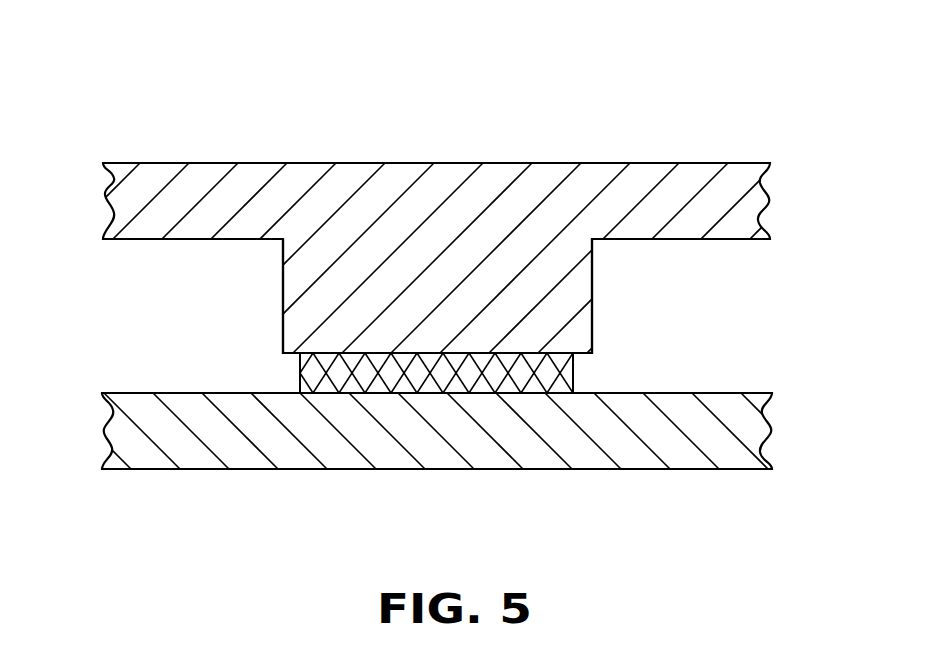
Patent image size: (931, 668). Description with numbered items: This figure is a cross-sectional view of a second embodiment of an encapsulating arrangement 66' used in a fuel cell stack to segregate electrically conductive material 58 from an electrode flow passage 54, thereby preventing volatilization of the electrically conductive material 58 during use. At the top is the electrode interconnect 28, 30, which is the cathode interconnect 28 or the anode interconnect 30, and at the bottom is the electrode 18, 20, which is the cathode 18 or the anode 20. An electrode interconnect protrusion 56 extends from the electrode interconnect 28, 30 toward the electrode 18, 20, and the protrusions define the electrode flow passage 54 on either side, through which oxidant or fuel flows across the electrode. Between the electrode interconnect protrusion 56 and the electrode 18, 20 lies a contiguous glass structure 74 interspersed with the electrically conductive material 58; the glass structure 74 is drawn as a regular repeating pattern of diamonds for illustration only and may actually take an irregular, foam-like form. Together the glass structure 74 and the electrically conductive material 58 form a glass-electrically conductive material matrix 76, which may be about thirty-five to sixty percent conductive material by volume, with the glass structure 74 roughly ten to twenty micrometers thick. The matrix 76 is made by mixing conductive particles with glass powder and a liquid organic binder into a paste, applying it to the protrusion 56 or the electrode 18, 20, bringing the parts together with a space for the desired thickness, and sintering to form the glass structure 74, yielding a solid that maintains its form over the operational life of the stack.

The cathode interconnect 28 is at (465, 193).
The anode interconnect 30 is at (328, 163).
The electrode flow passage 54 is at (220, 291).
The electrode interconnect protrusion 56 is at (283, 337).
The electrically conductive material 58 is at (526, 378).
The glass structure 74 is at (315, 363).
The glass-electrically conductive material matrix 76 is at (438, 392).
The encapsulating arrangement 66' is at (703, 373).
The cathode 18 is at (436, 490).
The anode 20 is at (728, 452).